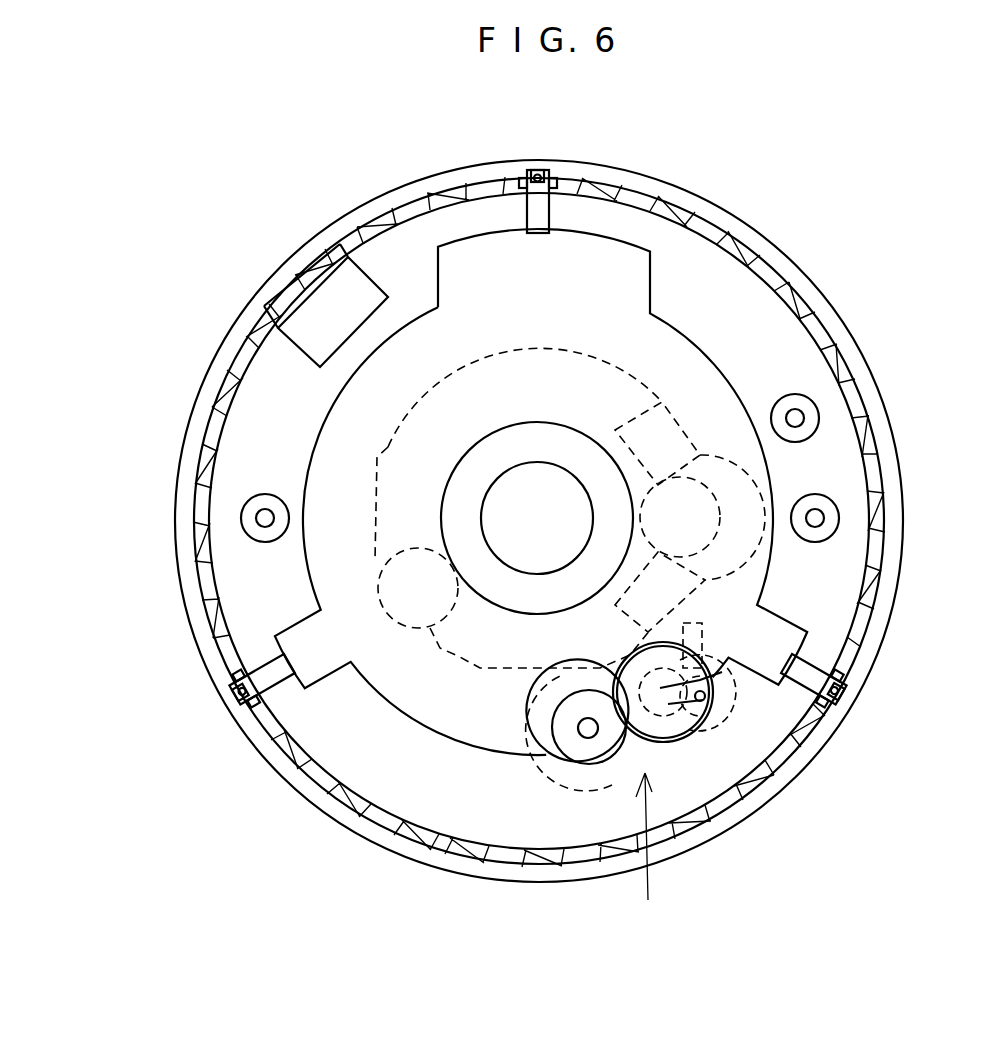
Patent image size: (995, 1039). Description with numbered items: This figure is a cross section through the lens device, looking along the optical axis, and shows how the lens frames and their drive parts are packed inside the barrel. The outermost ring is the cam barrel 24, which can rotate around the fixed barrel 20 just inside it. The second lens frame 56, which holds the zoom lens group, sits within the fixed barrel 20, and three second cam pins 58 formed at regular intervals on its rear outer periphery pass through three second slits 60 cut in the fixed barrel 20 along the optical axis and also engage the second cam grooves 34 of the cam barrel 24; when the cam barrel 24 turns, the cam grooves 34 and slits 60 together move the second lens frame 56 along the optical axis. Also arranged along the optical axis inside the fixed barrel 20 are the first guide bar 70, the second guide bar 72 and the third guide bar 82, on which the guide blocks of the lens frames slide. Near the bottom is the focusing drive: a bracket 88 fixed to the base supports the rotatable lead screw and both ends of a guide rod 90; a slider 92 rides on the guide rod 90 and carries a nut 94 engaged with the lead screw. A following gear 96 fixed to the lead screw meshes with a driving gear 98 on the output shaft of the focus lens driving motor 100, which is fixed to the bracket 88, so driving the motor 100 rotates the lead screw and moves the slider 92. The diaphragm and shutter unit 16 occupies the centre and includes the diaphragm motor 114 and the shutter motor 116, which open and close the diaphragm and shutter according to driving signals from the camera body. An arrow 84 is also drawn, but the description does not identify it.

The diaphragm and shutter unit 16 is at (462, 388).
The fixed barrel 20 is at (742, 242).
The cam barrel 24 is at (805, 286).
The second cam grooves 34 is at (540, 180).
The second lens frame 56 is at (365, 415).
The second cam pins 58 is at (532, 207).
The second slits 60 is at (552, 187).
The first guide bar 70 is at (812, 412).
The second guide bar 72 is at (243, 518).
The third guide bar 82 is at (840, 518).
The rotation direction arrow 84 is at (651, 854).
The bracket 88 is at (668, 700).
The guide rod 90 is at (735, 700).
The slider 92 is at (730, 718).
The nut 94 is at (700, 668).
The following gear 96 is at (663, 733).
The driving gear 98 is at (591, 763).
The focus lens driving motor 100 is at (563, 767).
The diaphragm motor 114 is at (390, 588).
The shutter motor 116 is at (697, 497).